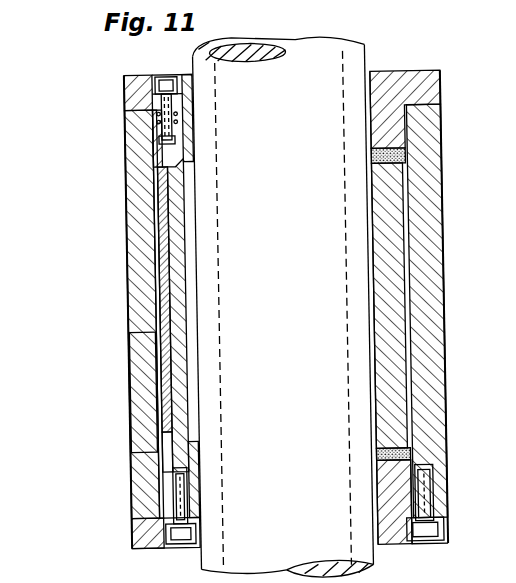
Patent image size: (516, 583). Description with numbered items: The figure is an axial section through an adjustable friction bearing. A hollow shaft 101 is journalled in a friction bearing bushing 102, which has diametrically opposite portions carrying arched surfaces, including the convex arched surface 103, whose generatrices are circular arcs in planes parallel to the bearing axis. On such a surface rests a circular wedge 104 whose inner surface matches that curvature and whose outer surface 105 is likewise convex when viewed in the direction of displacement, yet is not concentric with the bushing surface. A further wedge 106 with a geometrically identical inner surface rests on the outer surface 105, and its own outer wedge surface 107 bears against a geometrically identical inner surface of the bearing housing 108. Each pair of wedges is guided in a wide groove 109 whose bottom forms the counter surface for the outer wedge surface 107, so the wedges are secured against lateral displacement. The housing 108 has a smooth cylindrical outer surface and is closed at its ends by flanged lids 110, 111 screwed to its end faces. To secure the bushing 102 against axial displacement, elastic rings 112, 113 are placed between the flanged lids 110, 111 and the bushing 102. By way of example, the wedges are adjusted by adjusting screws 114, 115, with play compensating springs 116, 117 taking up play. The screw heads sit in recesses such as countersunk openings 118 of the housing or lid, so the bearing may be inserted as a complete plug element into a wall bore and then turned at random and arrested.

The hollow shaft 101 is at (340, 546).
The friction bearing bushing 102 is at (396, 261).
The convex arched surface 103 is at (134, 327).
The circular wedge 104 is at (171, 215).
The outer surface of wedge 105 is at (163, 296).
The wedge 106 is at (180, 149).
The outer wedge surface 107 is at (157, 254).
The bearing housing 108 is at (146, 376).
The wide groove 109 is at (152, 440).
The flanged lid 110 is at (432, 91).
The flanged lid 111 is at (440, 511).
The elastic ring 112 is at (400, 157).
The elastic ring 113 is at (406, 454).
The adjusting screw 114 is at (157, 75).
The adjusting screw 115 is at (136, 532).
The play compensating spring 116 is at (166, 120).
The play compensating spring 117 is at (137, 502).
The countersunk opening 118 is at (434, 533).